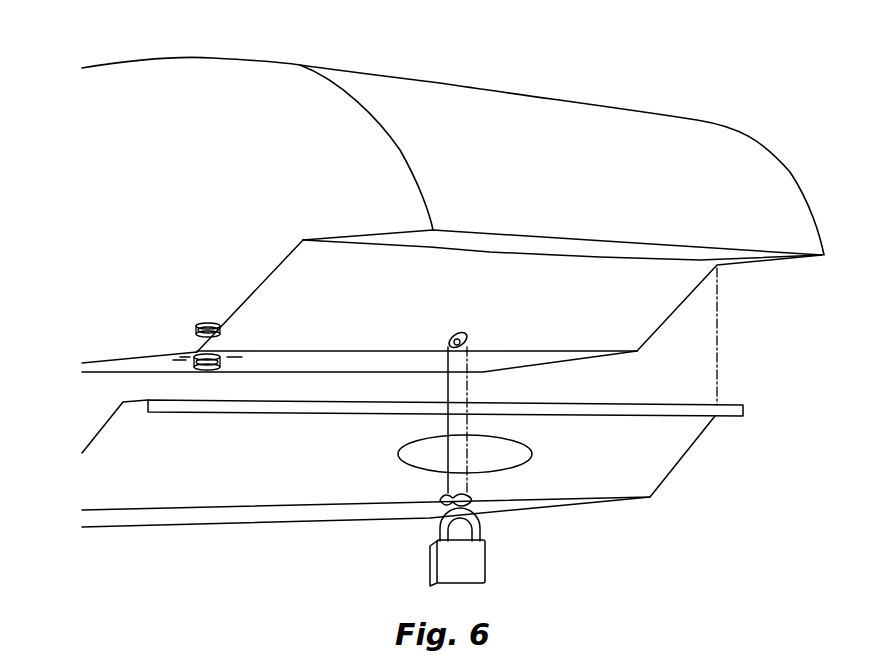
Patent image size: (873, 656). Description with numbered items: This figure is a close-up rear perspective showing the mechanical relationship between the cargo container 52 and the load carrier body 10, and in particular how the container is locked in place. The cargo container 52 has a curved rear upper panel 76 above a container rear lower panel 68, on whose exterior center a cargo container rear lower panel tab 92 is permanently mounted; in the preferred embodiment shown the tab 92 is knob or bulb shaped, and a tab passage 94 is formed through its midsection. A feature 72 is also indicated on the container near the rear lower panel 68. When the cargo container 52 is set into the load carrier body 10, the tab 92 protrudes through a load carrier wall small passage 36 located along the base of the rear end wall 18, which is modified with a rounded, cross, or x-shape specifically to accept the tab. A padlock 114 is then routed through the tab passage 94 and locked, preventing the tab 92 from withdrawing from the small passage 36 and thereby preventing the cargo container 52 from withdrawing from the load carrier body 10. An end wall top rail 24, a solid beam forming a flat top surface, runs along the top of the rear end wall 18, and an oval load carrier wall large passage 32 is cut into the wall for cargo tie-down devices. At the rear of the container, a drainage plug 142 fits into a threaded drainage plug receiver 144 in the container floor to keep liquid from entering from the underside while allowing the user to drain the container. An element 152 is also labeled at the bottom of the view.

The cargo container 52 is at (118, 46).
The cargo container rear upper panel 76 is at (599, 158).
The lid edge 72 is at (423, 233).
The container rear lower panel 68 is at (500, 288).
The drainage plug 142 is at (207, 324).
The drainage plug receiver 144 is at (200, 352).
The cargo container rear lower panel tab 92 is at (453, 335).
The tab passage 94 is at (462, 334).
The load carrier body 10 is at (701, 373).
The rear end wall 18 is at (284, 481).
The end wall top rail 24 is at (668, 418).
The load carrier wall large passage 32 is at (533, 447).
The load carrier wall small passage 36 is at (447, 497).
The padlock 114 is at (460, 562).
The element 152 is at (587, 655).